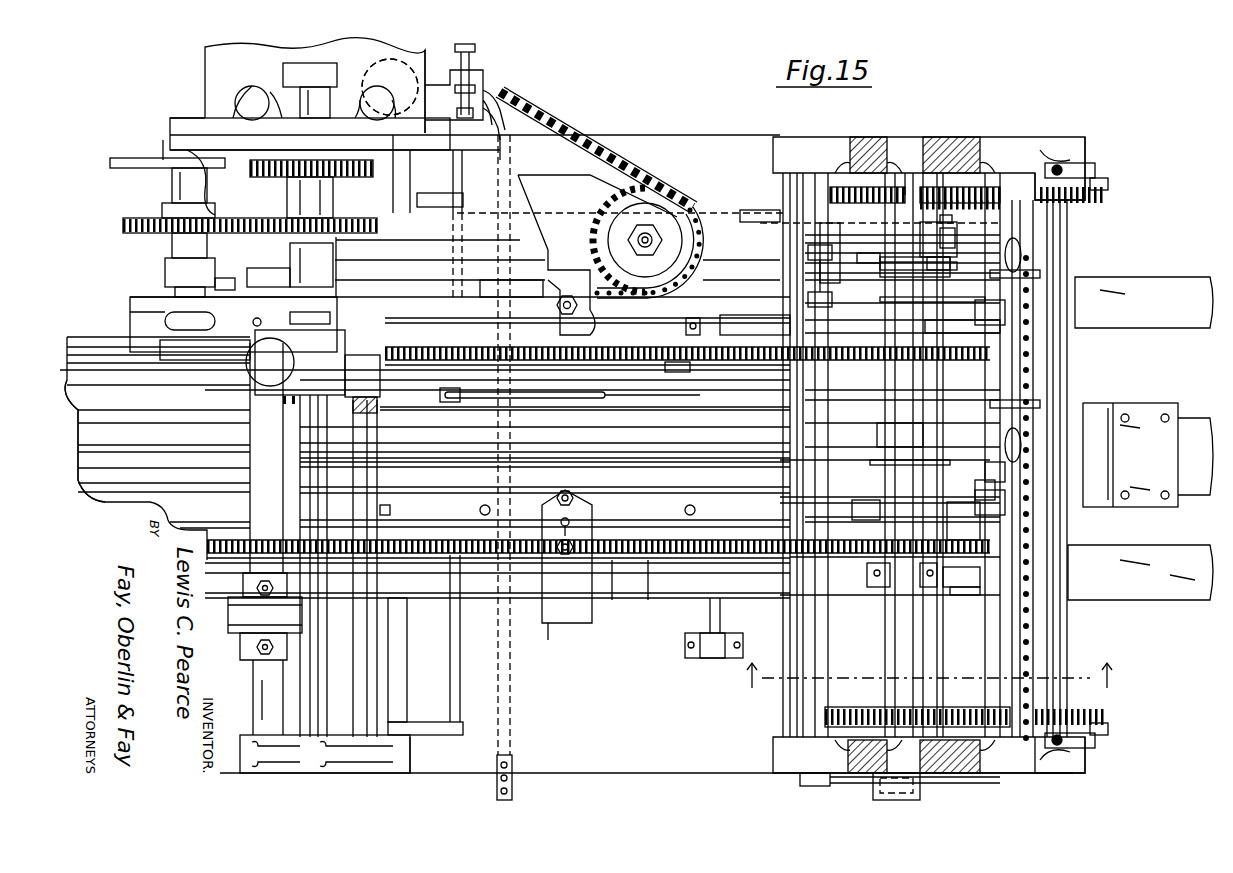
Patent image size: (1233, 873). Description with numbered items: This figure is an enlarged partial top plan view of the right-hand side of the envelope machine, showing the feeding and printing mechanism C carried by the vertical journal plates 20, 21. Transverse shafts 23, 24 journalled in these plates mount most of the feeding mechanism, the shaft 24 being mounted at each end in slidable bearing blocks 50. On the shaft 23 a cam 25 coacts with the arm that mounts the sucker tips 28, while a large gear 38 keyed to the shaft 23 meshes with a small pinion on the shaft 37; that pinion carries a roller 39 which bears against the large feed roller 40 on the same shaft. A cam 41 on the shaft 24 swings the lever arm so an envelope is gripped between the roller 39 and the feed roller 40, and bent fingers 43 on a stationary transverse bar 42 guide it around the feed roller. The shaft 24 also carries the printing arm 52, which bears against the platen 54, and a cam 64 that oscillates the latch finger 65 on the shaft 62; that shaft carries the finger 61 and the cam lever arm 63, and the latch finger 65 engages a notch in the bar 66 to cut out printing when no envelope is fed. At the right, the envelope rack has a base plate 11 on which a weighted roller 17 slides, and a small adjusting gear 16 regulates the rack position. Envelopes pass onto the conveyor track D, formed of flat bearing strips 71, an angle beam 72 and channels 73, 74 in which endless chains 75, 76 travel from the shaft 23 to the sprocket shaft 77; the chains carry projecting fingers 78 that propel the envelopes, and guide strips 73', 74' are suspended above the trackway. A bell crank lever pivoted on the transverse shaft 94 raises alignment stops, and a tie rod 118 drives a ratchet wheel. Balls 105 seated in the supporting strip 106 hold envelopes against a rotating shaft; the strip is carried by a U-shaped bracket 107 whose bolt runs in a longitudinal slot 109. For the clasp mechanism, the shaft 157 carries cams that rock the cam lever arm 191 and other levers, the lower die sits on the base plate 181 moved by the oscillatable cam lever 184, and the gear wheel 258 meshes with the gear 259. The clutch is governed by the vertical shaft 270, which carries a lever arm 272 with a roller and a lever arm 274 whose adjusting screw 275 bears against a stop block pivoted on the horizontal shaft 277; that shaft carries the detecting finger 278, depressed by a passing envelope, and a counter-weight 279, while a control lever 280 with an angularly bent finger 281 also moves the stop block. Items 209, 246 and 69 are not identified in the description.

The roller 209 is at (222, 118).
The lever arm 272 is at (355, 75).
The vertical shaft 270 is at (402, 63).
The adjusting screw 275 is at (476, 58).
The lever arm 274 is at (488, 92).
The arm 246 is at (492, 100).
The angularly bent finger 281 is at (532, 111).
The shaft 157 is at (178, 190).
The gear 259 is at (229, 218).
The gear wheel 258 is at (262, 218).
The counter-weight 279 is at (430, 198).
The horizontal shaft 277 is at (462, 192).
The slidable bearing blocks 50 is at (927, 140).
The cam 41 is at (965, 186).
The vertical journal plate 21 is at (1074, 160).
The large gear 38 is at (957, 216).
The shaft 37 is at (990, 473).
The cam 25 is at (950, 260).
The cam lever arm 63 is at (834, 262).
The cam 64 is at (878, 253).
The shaft 62 is at (880, 268).
The finger 61 is at (843, 298).
The bent fingers 43 is at (949, 308).
The large feed roller 40 is at (946, 346).
The stationary transverse bar 42 is at (200, 482).
The sucker tips 28 is at (1024, 263).
The weighted roller 17 is at (1096, 416).
The base plate 11 is at (1188, 425).
The oscillatable cam lever 184 is at (233, 324).
The cam lever arm 191 is at (198, 372).
The base plate 181 is at (265, 539).
The detecting finger 278 is at (532, 394).
The channel 74 is at (687, 343).
The endless chain 76 is at (630, 353).
The guide strip 74' is at (652, 398).
The perpendicular projecting fingers 78 is at (670, 372).
The tie rod 118 is at (590, 455).
The longitudinal slots 109 is at (572, 510).
The supporting strip 106 is at (398, 512).
The balls 105 is at (480, 511).
The channel 73 is at (598, 530).
The sprocket shaft 77 is at (660, 541).
The guide strip 73' is at (498, 564).
The endless chain 75 is at (615, 600).
The angle beam 72 is at (650, 600).
The U-shaped bracket 107 is at (564, 633).
The control lever 280 is at (507, 713).
The transverse shaft 94 is at (726, 636).
The small adjusting gear 16 is at (929, 680).
The flat intermediate bearing strips 71 is at (838, 477).
The roller 39 is at (976, 506).
The printing arm 52 is at (961, 577).
The platen 54 is at (948, 598).
The shaft 24 is at (884, 643).
The shaft 23 is at (944, 650).
The latch finger 65 is at (805, 786).
The nut 69 is at (870, 788).
The bar 66 is at (930, 790).
The vertical journal plate 20 is at (1076, 764).